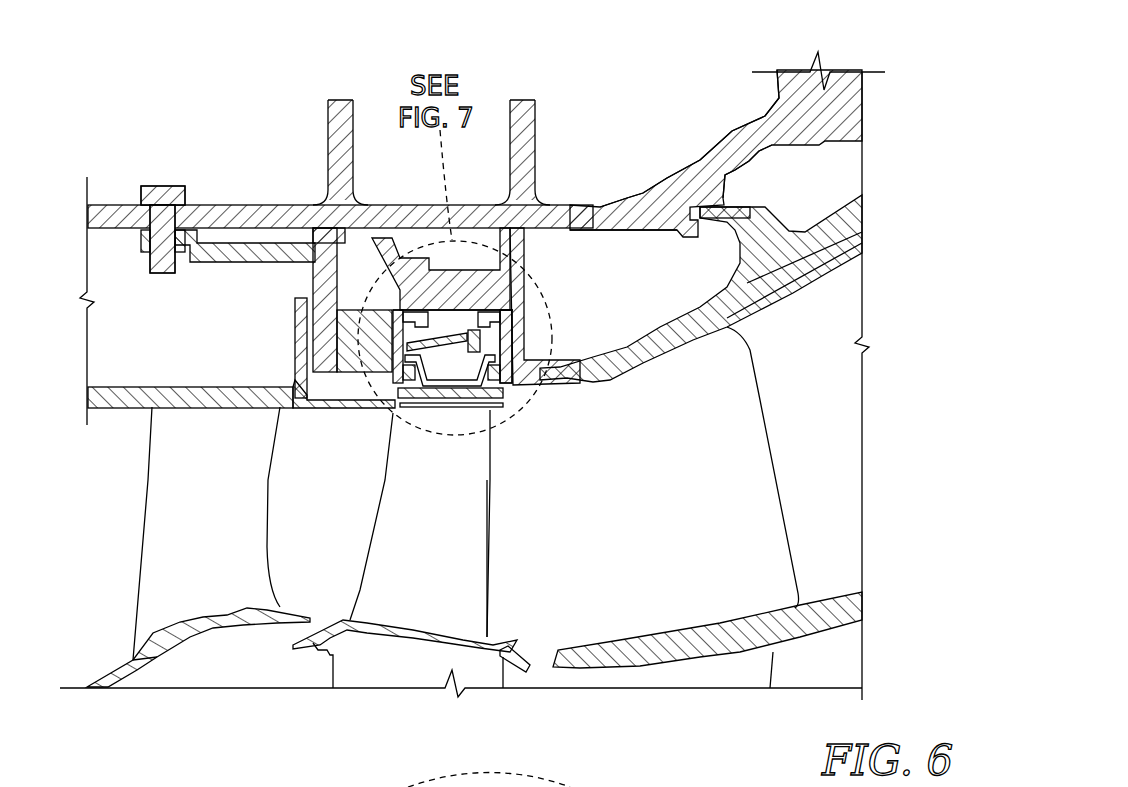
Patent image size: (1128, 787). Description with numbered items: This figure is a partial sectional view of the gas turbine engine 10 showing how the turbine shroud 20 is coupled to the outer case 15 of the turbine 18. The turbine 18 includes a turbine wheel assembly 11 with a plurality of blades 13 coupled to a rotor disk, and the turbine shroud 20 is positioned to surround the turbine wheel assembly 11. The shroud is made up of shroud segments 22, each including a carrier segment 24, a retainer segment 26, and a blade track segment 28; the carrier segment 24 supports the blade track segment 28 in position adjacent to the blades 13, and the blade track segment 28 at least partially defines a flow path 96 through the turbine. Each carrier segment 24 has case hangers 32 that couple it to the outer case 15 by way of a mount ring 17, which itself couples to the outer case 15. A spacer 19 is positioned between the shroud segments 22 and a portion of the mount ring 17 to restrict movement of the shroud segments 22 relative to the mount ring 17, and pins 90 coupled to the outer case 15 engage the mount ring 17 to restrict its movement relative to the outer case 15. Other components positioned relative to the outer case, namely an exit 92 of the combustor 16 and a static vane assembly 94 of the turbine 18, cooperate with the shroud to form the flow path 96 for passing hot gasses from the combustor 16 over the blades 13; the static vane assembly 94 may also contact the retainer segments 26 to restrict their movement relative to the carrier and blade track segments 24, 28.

The gas turbine engine 10 is at (870, 60).
The turbine wheel assembly 11 is at (507, 560).
The blades 13 is at (459, 592).
The outer case 15 is at (631, 189).
The combustor 16 is at (100, 146).
The mount ring 17 is at (432, 263).
The turbine 18 is at (690, 137).
The spacer 19 is at (355, 302).
The turbine shroud 20 is at (546, 294).
The shroud segment 22 is at (566, 312).
The carrier segment 24 is at (386, 381).
The retainer segment 26 is at (522, 350).
The blade track segment 28 is at (503, 412).
The case hangers 32 is at (423, 304).
The pins 90 is at (166, 181).
The exit 92 is at (178, 562).
The static vane assembly 94 is at (837, 417).
The flow path 96 is at (324, 535).